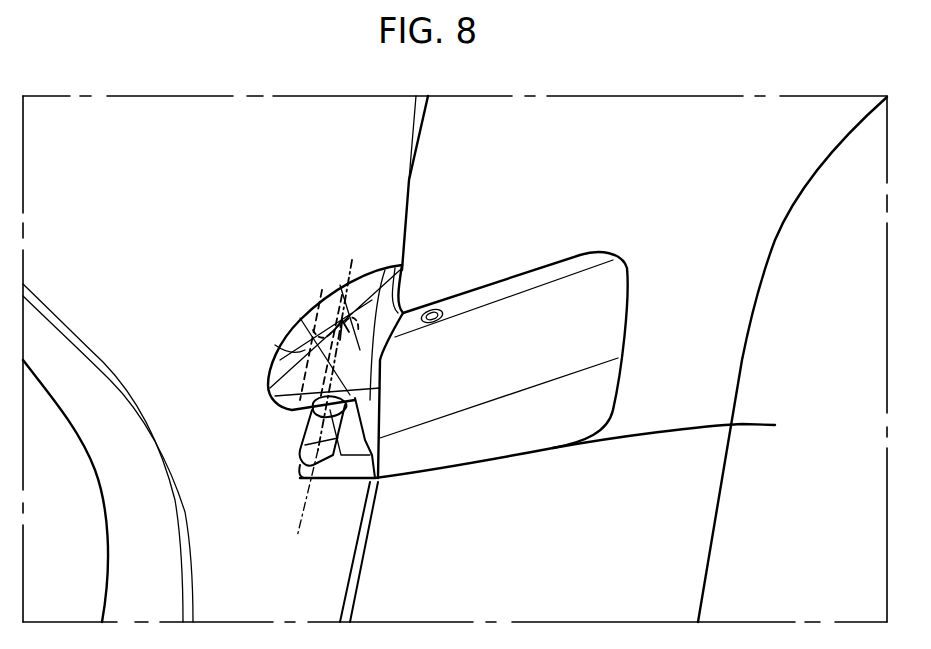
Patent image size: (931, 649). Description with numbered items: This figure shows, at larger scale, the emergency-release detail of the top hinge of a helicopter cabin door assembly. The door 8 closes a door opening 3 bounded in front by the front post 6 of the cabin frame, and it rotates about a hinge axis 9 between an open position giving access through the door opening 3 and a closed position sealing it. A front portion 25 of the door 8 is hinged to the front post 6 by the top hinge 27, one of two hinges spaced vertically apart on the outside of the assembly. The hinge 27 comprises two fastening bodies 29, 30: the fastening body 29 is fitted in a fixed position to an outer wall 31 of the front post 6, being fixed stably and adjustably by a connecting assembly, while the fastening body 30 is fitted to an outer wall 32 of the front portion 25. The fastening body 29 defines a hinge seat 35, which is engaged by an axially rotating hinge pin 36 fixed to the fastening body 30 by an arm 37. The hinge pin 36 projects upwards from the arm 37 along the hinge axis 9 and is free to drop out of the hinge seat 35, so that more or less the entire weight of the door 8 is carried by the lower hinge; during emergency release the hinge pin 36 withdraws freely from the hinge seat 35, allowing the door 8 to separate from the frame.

The door opening 3 is at (367, 542).
The front post 6 is at (288, 505).
The door 8 is at (703, 522).
The hinge axis 9 is at (352, 260).
The front portion 25 is at (775, 425).
The hinge 27 is at (638, 260).
The fastening body 29 is at (277, 343).
The fastening body 30 is at (447, 468).
The outer wall 31 is at (336, 272).
The outer wall 32 is at (460, 290).
The hinge seat 35 is at (322, 330).
The hinge pin 36 is at (310, 445).
The arm 37 is at (342, 478).